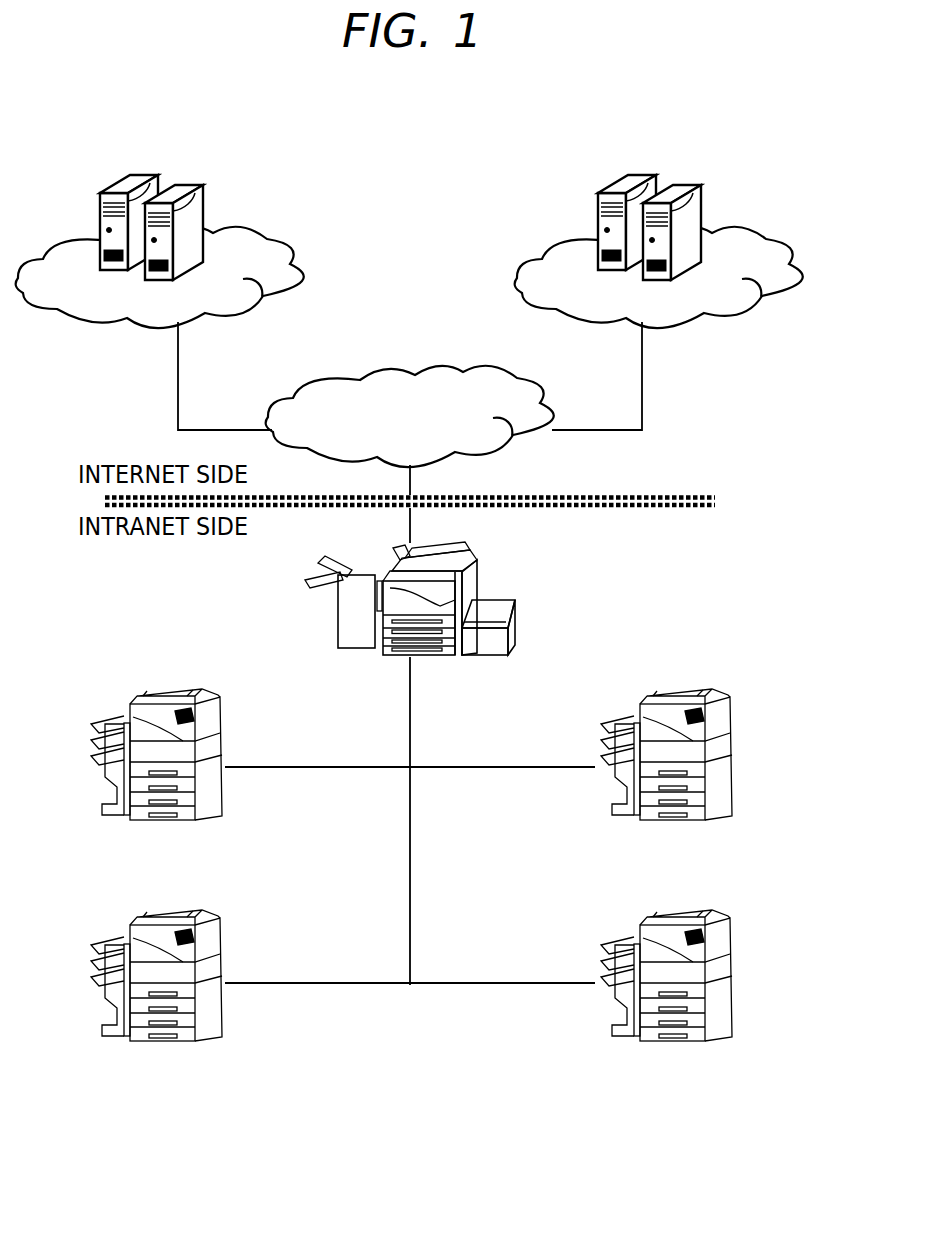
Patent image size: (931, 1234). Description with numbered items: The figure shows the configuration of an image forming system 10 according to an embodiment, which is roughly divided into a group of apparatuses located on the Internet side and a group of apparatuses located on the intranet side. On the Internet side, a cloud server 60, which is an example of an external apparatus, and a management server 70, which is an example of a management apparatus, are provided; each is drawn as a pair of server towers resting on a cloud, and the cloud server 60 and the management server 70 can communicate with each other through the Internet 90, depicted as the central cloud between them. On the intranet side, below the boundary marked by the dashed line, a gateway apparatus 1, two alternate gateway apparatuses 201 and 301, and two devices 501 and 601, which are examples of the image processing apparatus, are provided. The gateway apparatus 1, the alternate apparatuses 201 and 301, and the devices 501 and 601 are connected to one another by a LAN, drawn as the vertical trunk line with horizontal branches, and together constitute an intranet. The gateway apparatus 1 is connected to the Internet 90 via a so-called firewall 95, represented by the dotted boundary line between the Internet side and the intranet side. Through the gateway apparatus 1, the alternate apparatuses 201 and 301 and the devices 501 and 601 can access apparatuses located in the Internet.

The image forming system 10 is at (445, 103).
The cloud server 60 is at (183, 163).
The management server 70 is at (671, 163).
The Internet 90 is at (414, 361).
The firewall 95 is at (666, 495).
The gateway apparatus 1 is at (500, 581).
The alternate gateway apparatus 201 is at (227, 798).
The alternate gateway apparatus 301 is at (227, 1019).
The device 501 is at (742, 798).
The device 601 is at (742, 1019).